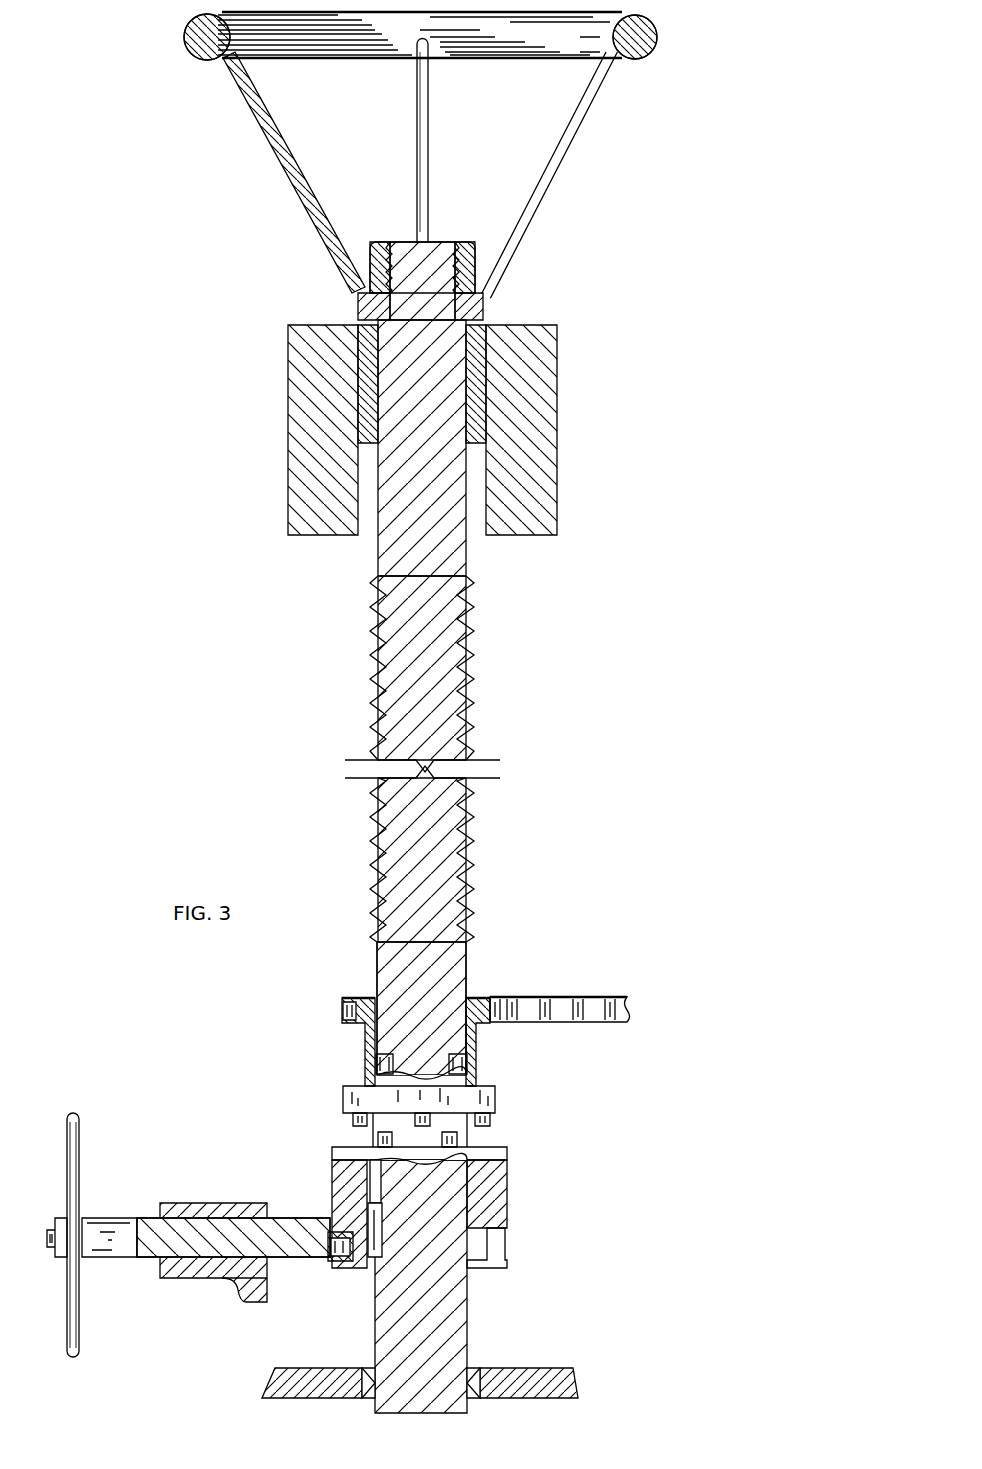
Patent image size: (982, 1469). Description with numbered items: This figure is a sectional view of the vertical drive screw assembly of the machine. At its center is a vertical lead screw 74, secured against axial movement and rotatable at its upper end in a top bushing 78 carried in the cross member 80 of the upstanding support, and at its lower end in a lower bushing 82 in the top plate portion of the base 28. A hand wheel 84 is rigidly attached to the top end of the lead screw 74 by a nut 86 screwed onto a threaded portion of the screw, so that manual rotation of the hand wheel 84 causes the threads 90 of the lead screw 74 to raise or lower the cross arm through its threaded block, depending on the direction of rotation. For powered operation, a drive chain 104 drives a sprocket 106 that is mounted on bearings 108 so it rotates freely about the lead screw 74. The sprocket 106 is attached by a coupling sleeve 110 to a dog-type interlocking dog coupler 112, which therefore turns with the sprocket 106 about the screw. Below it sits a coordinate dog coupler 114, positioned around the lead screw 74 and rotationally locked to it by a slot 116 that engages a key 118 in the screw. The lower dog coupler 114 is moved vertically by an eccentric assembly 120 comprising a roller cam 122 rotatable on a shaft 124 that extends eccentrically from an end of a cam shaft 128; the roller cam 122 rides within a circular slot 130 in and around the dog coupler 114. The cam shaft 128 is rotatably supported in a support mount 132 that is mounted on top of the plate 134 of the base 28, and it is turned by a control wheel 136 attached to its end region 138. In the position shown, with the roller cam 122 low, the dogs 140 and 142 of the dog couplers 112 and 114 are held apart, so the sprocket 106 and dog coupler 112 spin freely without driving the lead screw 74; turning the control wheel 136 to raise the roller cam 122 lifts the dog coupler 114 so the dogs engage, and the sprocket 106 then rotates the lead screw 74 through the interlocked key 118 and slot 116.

The base 28 is at (578, 1393).
The lead screw 74 is at (470, 916).
The top bushing 78 is at (487, 353).
The cross member 80 is at (557, 398).
The lower bushing 82 is at (478, 1368).
The hand wheel 84 is at (534, 224).
The nut 86 is at (472, 242).
The threads 90 is at (476, 700).
The drive chain 104 is at (573, 1023).
The sprocket 106 is at (478, 997).
The bearings 108 is at (375, 1061).
The coupling sleeve 110 is at (470, 1073).
The dog coupler 112 is at (497, 1100).
The dog coupler 114 is at (508, 1158).
The slot 116 is at (378, 1168).
The key 118 is at (380, 1222).
The eccentric assembly 120 is at (221, 1266).
The roller cam 122 is at (328, 1262).
The shaft 124 is at (325, 1262).
The cam shaft 128 is at (158, 1258).
The circular slot 130 is at (507, 1256).
The support mount 132 is at (222, 1290).
The plate 134 is at (330, 1368).
The control wheel 136 is at (80, 1350).
The end region 138 is at (88, 1218).
The dogs 140 is at (355, 1121).
The dogs 142 is at (378, 1140).